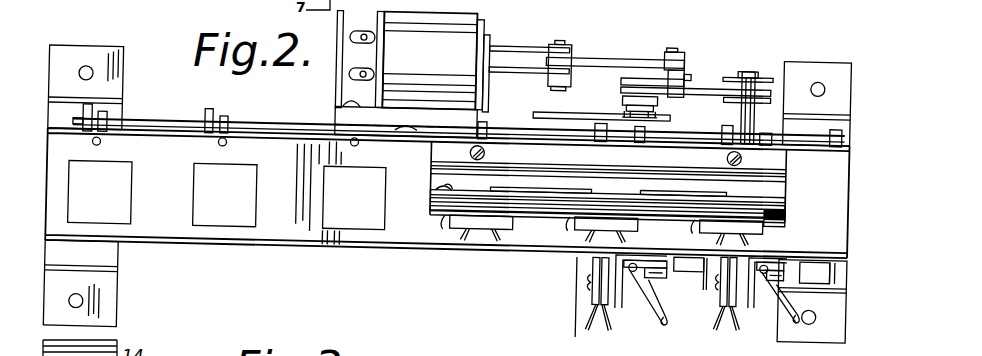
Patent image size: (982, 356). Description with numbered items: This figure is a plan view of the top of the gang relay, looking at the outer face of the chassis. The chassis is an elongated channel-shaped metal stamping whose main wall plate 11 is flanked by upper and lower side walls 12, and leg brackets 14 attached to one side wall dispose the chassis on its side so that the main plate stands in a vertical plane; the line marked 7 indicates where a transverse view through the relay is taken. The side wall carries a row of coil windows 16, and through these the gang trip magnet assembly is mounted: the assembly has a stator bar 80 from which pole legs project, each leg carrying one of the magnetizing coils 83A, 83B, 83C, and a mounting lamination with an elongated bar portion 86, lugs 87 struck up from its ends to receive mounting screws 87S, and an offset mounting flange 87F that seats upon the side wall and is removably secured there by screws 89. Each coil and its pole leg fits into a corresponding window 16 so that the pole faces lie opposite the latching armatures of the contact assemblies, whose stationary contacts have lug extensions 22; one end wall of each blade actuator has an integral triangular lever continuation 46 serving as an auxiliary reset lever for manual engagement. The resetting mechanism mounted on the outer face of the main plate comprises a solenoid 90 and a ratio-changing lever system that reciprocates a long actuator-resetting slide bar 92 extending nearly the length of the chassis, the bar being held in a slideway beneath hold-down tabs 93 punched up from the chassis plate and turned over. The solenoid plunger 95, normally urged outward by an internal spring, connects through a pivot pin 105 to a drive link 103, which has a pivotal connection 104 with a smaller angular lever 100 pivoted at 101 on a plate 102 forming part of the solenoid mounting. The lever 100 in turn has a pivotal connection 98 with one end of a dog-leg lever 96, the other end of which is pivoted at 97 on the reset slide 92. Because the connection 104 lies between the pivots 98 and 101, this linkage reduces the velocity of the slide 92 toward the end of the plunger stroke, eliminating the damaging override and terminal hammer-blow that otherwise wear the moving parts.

The section line 7- 7 is at (578, 310).
The main wall plate 11 is at (192, 114).
The side walls 12 is at (177, 157).
The leg brackets 14 is at (120, 51).
The coil windows 16 is at (236, 183).
The lug extensions 22 is at (600, 320).
The lever continuation 46 is at (668, 313).
The stator bar 80 is at (787, 197).
The magnetizing coil 83A is at (452, 215).
The magnetizing coil 83B is at (578, 213).
The magnetizing coil 83C is at (704, 212).
The bar portion 86 is at (778, 143).
The lugs 87 is at (787, 181).
The offset mounting flange 87F is at (592, 151).
The mounting screws 87S is at (776, 210).
The screws 89 is at (485, 144).
The solenoid 90 is at (436, 56).
The actuator-resetting slide bar 92 is at (269, 124).
The hold-down tabs 93 is at (218, 114).
The plunger 95 is at (512, 47).
The dog-leg lever 96 is at (690, 77).
The pivot 97 is at (750, 62).
The pivotal connection 98 is at (623, 85).
The angular lever 100 is at (683, 65).
The pivot 101 is at (622, 66).
The plate 102 is at (542, 103).
The solenoid drive link 103 is at (598, 48).
The pivotal connection 104 is at (670, 36).
The pivot pin 105 is at (550, 33).